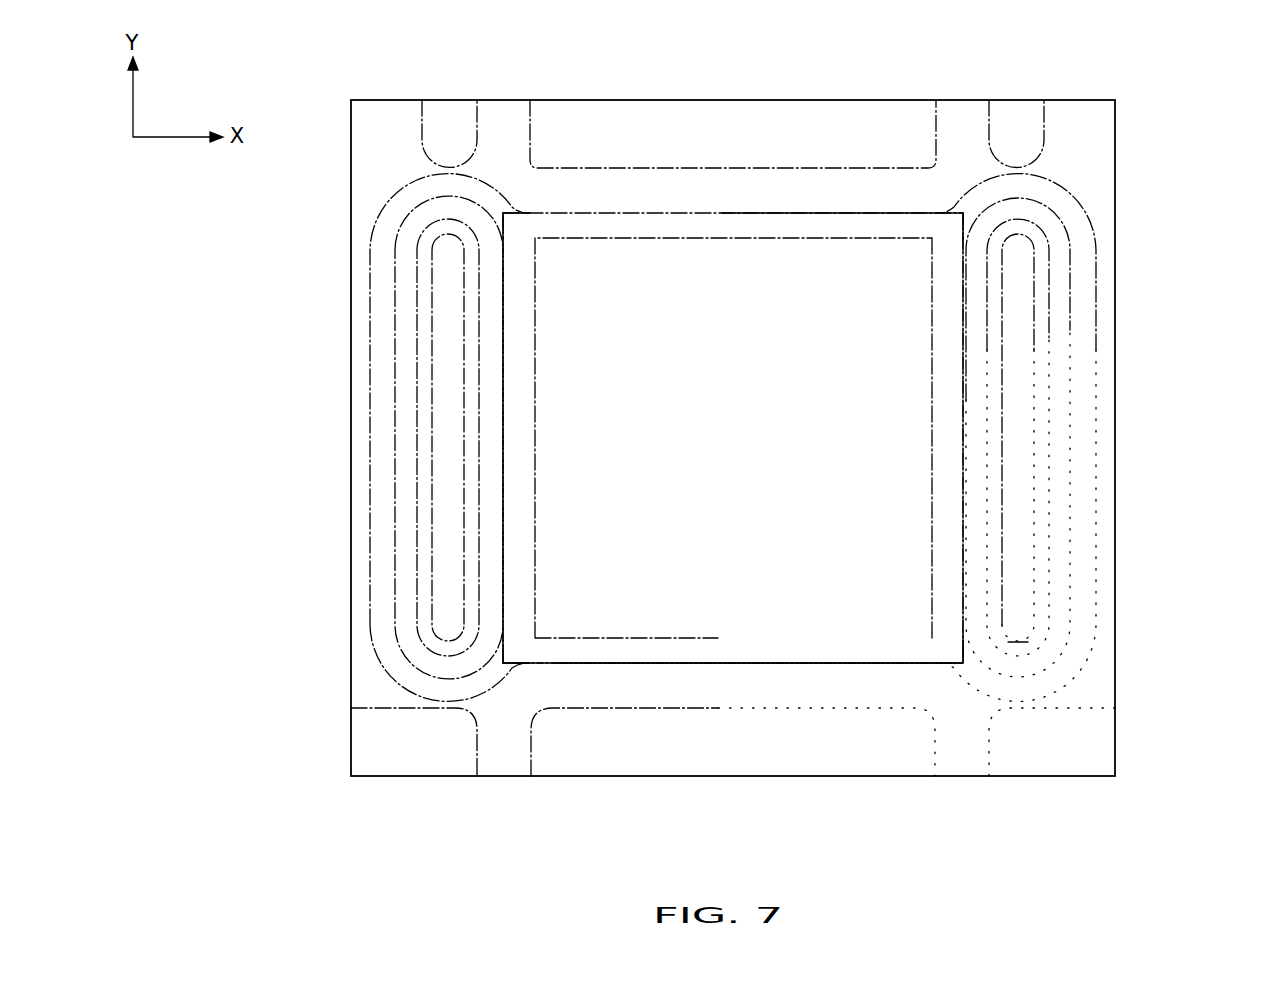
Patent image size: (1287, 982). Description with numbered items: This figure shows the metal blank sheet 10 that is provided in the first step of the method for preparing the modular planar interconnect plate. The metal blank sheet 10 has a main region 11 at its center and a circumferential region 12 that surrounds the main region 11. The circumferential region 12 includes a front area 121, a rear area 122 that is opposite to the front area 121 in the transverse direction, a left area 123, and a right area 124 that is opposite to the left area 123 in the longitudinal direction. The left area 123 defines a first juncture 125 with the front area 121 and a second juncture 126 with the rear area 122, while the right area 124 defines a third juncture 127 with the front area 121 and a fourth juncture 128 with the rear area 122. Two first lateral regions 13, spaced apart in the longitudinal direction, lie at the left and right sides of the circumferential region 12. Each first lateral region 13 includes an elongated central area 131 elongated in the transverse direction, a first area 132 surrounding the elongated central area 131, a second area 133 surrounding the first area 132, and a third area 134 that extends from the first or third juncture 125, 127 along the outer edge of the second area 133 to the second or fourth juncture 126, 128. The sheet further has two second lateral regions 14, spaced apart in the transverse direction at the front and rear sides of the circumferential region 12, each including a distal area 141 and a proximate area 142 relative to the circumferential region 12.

The metal blank sheet 10 is at (1103, 90).
The main region 11 is at (672, 510).
The circumferential region 12 is at (722, 214).
The front area 121 is at (650, 236).
The rear area 122 is at (658, 655).
The left area 123 is at (521, 475).
The right area 124 is at (950, 472).
The first juncture 125 is at (523, 228).
The second juncture 126 is at (520, 647).
The third juncture 127 is at (945, 225).
The fourth juncture 128 is at (948, 645).
The first lateral region 13 is at (257, 225).
The elongated central area 131 is at (443, 273).
The first area 132 is at (423, 335).
The second area 133 is at (408, 387).
The third area 134 is at (382, 415).
The second lateral region 14 is at (733, 441).
The distal area 141 is at (828, 130).
The proximate area 142 is at (862, 187).